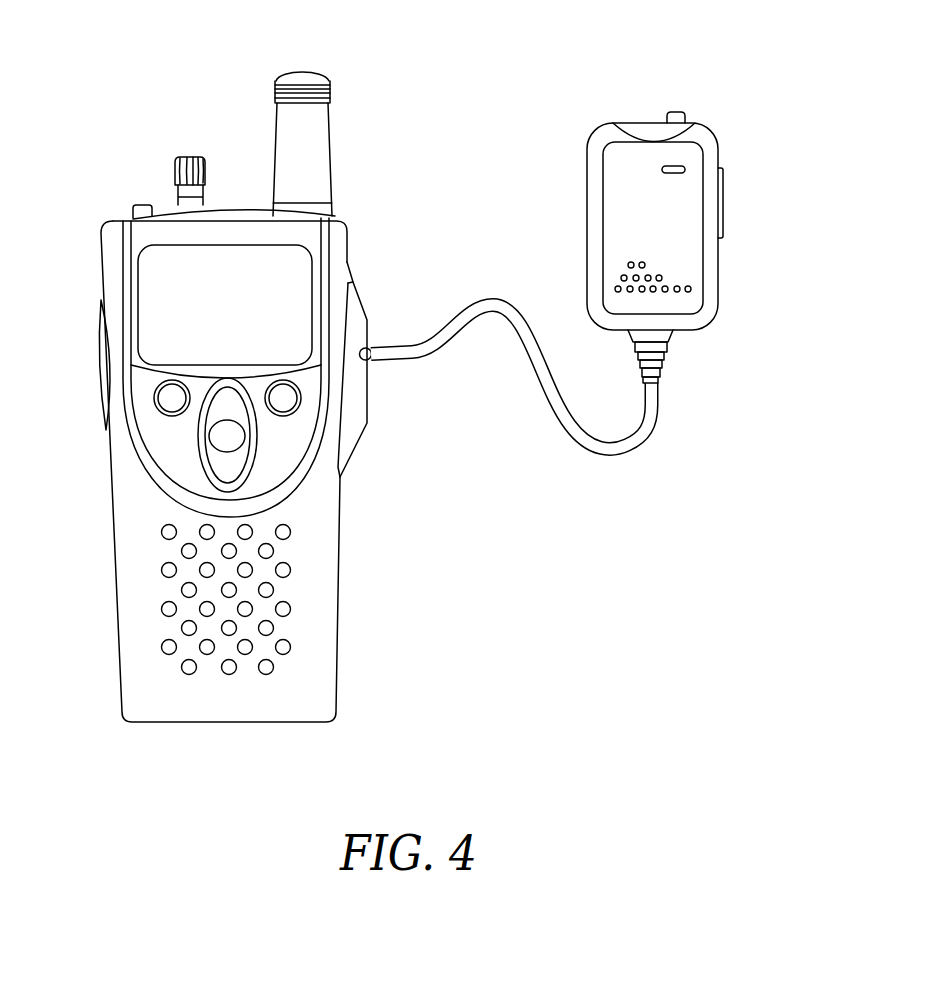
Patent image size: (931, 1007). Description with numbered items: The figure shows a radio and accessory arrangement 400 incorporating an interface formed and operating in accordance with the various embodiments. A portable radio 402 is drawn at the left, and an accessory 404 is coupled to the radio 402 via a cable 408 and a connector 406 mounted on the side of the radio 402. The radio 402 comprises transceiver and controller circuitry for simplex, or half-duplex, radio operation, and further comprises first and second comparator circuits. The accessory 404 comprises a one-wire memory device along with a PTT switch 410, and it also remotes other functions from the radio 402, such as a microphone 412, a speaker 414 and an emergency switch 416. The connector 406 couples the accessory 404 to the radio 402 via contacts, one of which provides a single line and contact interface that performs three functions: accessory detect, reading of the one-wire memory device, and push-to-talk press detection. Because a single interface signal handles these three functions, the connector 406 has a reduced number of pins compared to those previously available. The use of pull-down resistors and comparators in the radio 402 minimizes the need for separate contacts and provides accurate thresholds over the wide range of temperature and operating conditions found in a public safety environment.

The communication system 400 is at (440, 405).
The radio 402 is at (337, 630).
The accessory 404 is at (705, 322).
The connector 406 is at (367, 397).
The cable 408 is at (622, 458).
The PTT switch 410 is at (723, 203).
The microphone 412 is at (685, 168).
The speaker 414 is at (621, 278).
The emergency switch 416 is at (677, 112).